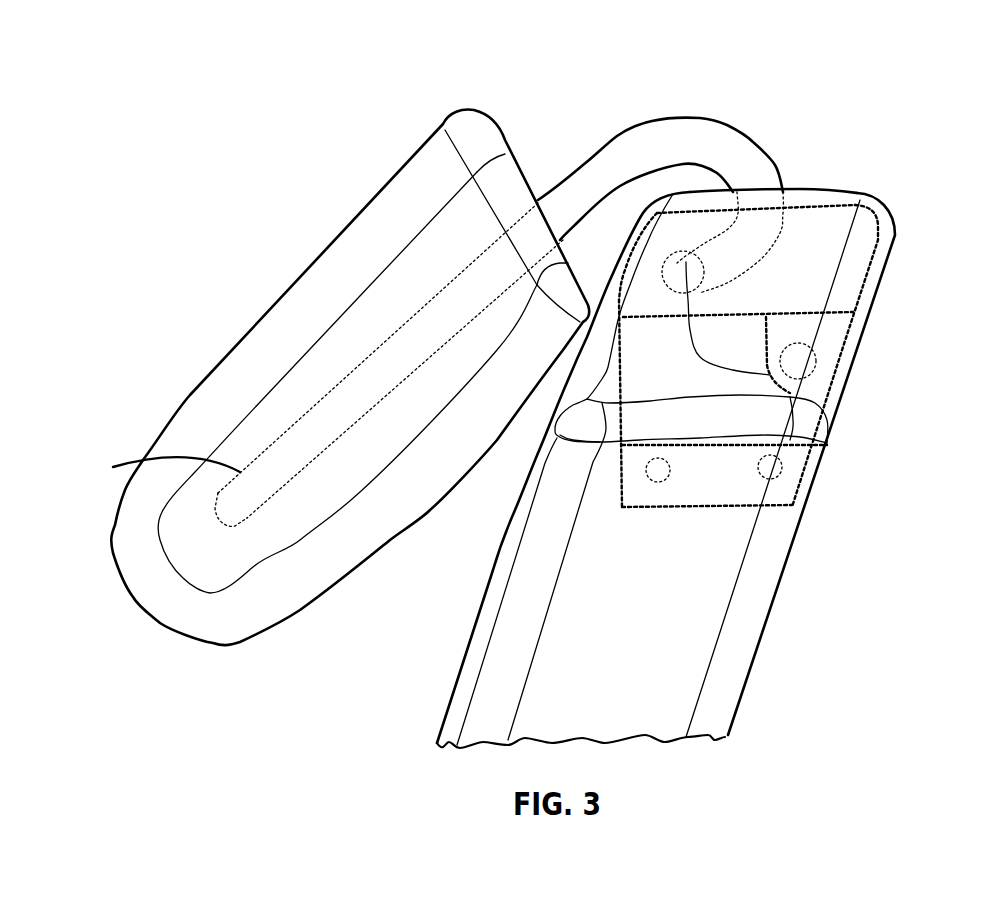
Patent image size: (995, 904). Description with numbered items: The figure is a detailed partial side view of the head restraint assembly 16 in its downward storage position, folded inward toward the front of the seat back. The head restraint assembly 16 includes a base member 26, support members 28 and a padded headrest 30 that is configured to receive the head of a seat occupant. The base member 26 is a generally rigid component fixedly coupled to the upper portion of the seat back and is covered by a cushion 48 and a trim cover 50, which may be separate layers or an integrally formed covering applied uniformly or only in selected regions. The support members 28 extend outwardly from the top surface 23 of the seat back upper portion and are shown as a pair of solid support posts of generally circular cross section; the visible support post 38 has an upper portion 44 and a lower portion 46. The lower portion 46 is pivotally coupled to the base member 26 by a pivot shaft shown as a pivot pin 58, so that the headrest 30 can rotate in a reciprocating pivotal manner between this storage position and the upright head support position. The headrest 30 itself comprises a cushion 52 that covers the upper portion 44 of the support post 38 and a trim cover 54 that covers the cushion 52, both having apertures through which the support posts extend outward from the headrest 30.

The head restraint assembly 16 is at (228, 182).
The top surface 23 is at (805, 190).
The base member 26 is at (847, 285).
The support members 28 is at (706, 86).
The headrest 30 is at (247, 560).
The support post 38 is at (730, 145).
The upper portion 44 is at (113, 467).
The lower portion 46 is at (653, 123).
The cushion 48 is at (877, 196).
The trim cover 50 is at (762, 642).
The cushion 52 is at (320, 300).
The trim cover 54 is at (217, 368).
The pivot pin 58 is at (770, 375).